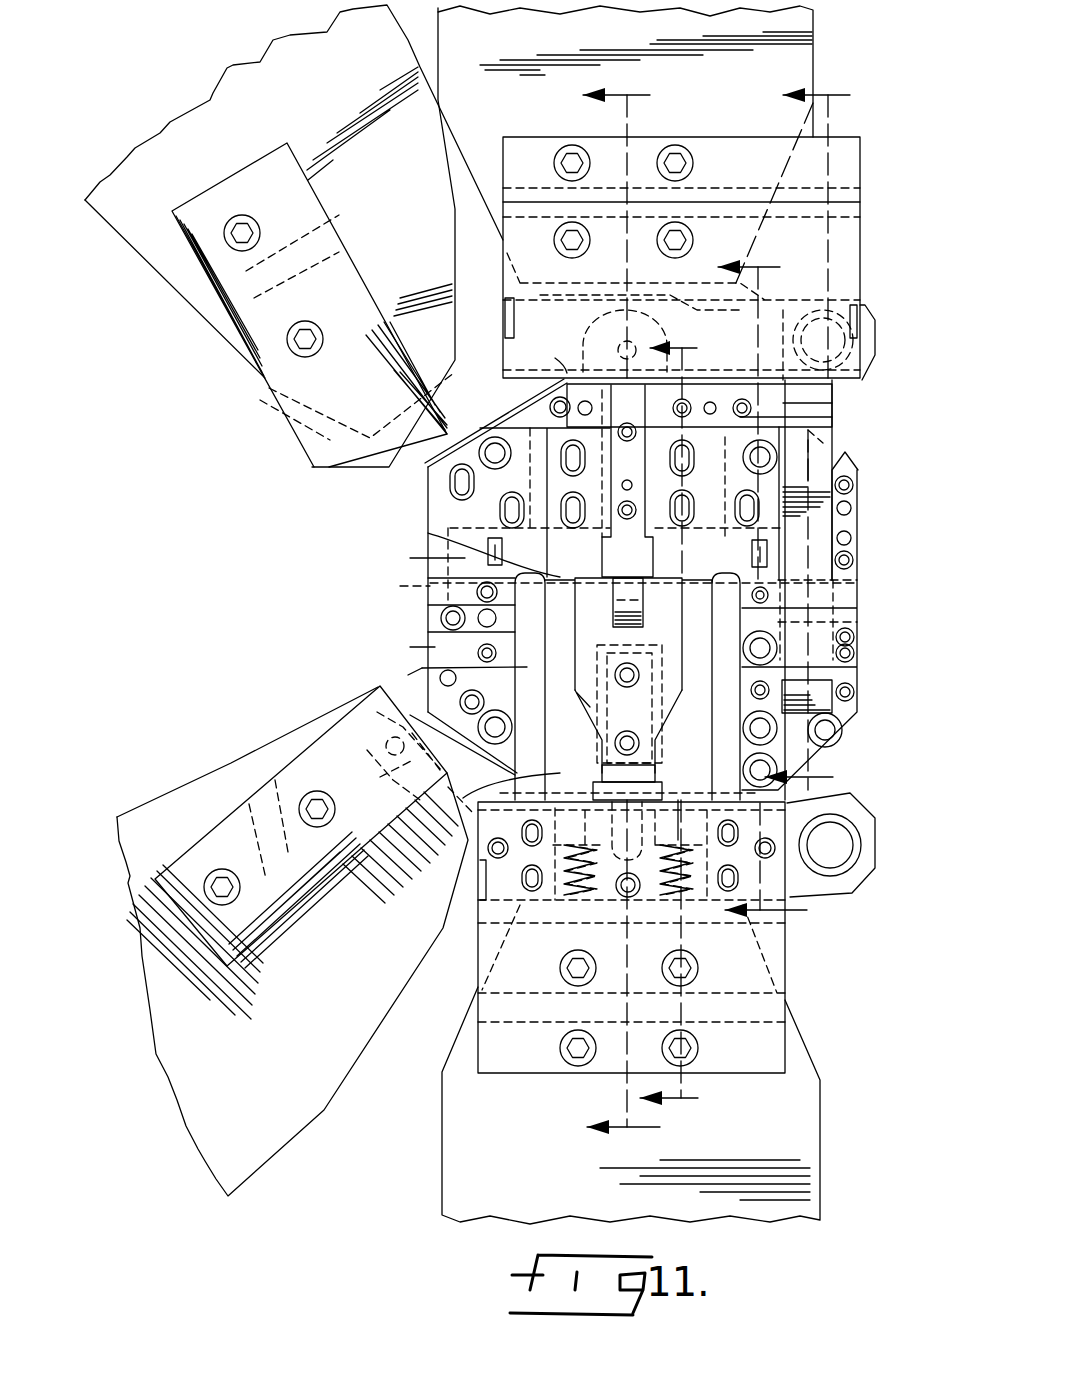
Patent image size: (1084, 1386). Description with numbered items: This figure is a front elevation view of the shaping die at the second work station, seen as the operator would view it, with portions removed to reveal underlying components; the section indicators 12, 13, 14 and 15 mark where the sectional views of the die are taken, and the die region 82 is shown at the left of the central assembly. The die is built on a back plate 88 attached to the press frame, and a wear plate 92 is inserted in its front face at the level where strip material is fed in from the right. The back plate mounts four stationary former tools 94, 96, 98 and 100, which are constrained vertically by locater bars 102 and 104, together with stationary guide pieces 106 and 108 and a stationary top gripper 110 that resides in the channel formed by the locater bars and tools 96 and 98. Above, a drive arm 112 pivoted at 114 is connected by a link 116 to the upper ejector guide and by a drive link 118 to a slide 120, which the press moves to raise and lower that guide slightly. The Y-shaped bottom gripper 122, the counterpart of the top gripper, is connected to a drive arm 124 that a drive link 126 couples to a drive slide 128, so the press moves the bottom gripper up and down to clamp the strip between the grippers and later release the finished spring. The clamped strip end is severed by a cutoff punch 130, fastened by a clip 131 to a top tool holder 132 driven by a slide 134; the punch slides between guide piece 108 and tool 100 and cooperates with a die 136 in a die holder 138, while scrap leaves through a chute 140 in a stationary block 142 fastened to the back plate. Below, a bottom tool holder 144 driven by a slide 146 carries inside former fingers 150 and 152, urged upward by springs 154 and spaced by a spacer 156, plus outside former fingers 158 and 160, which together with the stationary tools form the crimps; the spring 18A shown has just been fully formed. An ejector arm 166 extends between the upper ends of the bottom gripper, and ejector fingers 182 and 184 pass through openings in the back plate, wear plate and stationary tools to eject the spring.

The section line 12- 12 is at (825, 436).
The section line 13- 13 is at (780, 590).
The section line 14- 14 is at (687, 725).
The section line 15- 15 is at (638, 612).
The spring 18A is at (409, 558).
The gripper body 82 is at (424, 617).
The back plate 88 is at (430, 545).
The wear plate 92 is at (398, 584).
The stationary former tool 94 is at (430, 477).
The stationary former tool 96 is at (557, 432).
The stationary former tool 98 is at (832, 417).
The stationary former tool 100 is at (773, 498).
The locater bar 102 is at (834, 409).
The locater bar 104 is at (539, 355).
The stationary guide piece 106 is at (393, 648).
The stationary guide piece 108 is at (860, 517).
The stationary top gripper 110 is at (611, 553).
The drive arm 112 is at (477, 353).
The pivot 114 is at (855, 333).
The link 116 is at (612, 318).
The drive link 118 is at (312, 450).
The slide 120 is at (190, 314).
The bottom gripper 122 is at (588, 707).
The drive arm 124 is at (463, 844).
The drive link 126 is at (323, 737).
The drive slide 128 is at (181, 800).
The cutoff punch 130 is at (860, 472).
The clip 131 is at (863, 362).
The top tool holder 132 is at (860, 258).
The slide 134 is at (812, 50).
The die 136 is at (857, 617).
The die holder 138 is at (857, 645).
The chute 140 is at (822, 693).
The stationary block 142 is at (850, 722).
The bottom tool holder 144 is at (785, 1033).
The slide 146 is at (797, 1222).
The inside former finger 150 is at (459, 817).
The inside former finger 152 is at (850, 793).
The spring 154 is at (690, 912).
The spacer 156 is at (663, 790).
The outside former finger 158 is at (392, 678).
The outside former finger 160 is at (733, 750).
The ejector arm 166 is at (612, 600).
The ejector finger 182 is at (488, 543).
The ejector finger 184 is at (693, 575).